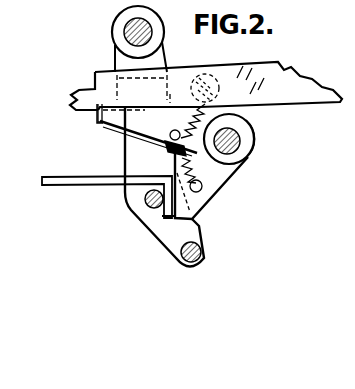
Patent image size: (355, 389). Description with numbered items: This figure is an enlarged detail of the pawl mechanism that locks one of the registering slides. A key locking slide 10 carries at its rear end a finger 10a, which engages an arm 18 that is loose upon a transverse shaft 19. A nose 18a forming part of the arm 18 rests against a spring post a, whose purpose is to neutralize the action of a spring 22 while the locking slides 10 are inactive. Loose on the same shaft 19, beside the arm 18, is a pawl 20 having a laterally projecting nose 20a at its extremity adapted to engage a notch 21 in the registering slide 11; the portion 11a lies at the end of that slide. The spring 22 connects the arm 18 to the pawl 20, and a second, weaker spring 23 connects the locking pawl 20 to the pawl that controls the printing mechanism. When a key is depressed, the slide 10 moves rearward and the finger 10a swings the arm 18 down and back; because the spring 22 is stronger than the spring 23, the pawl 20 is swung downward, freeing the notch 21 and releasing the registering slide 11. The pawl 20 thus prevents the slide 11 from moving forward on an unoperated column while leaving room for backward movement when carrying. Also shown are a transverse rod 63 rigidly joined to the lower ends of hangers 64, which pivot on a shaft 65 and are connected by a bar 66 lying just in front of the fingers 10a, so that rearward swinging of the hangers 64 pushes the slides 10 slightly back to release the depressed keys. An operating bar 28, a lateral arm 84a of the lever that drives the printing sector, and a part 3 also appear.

The arm 3 is at (134, 38).
The key locking slide 10 is at (80, 180).
The finger 10a is at (158, 206).
The registering slide 11 is at (281, 78).
The bar extension 11a is at (96, 90).
The arm 18 is at (208, 201).
The nose 18a is at (170, 151).
The transverse shaft 19 is at (240, 137).
The locking pawl 20 is at (128, 114).
The laterally projecting nose 20a is at (97, 88).
The notch 21 is at (97, 118).
The spring 22 is at (240, 163).
The second spring 23 is at (215, 115).
The operating bar 28 is at (47, 3).
The transverse rod 63 is at (203, 247).
The hanger 64 is at (204, 228).
The shaft 65 is at (123, 32).
The bar 66 is at (144, 199).
The lateral arm 84a is at (57, 14).
The spring post a is at (252, 140).